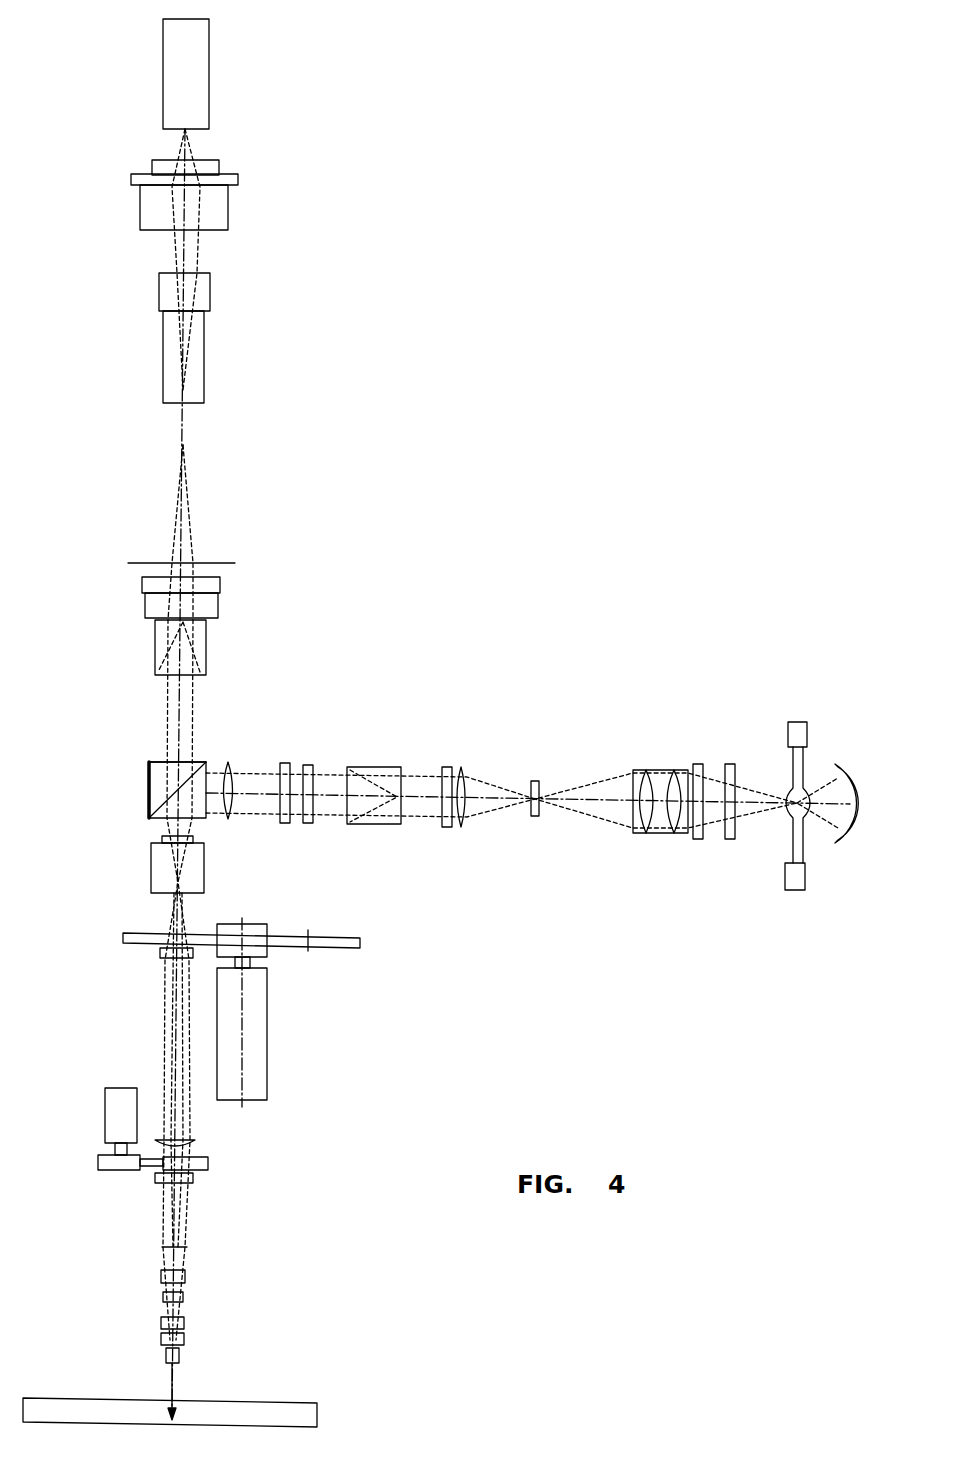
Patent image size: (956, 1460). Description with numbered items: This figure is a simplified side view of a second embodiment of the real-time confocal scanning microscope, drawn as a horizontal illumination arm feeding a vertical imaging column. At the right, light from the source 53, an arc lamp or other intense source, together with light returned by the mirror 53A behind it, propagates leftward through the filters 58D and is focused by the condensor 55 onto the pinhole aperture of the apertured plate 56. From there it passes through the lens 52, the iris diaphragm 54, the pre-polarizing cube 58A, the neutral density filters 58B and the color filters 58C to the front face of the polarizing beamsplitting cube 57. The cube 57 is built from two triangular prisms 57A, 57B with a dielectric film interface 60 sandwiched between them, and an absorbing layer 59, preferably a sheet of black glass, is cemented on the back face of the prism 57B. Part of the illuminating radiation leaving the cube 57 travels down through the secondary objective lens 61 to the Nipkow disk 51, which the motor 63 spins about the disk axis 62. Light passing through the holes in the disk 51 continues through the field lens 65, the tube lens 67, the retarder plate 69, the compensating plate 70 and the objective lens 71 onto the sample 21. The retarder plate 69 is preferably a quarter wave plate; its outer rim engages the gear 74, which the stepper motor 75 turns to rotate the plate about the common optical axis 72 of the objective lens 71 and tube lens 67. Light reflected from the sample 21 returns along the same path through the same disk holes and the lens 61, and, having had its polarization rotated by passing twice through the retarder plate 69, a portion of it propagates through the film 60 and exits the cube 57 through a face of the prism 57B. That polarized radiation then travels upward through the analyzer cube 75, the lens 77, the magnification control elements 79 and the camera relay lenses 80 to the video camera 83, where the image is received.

The sample 21 is at (82, 1403).
The Nipkow disk 51 is at (333, 947).
The lens 52 is at (463, 827).
The light source 53 is at (800, 760).
The mirror 53A is at (842, 840).
The iris diaphragm 54 is at (447, 827).
The condensor 55 is at (662, 770).
The apertured plate 56 is at (538, 817).
The polarizing beamsplitting cube 57 is at (175, 776).
The triangular prism 57A is at (199, 820).
The triangular prism 57B is at (150, 762).
The pre-polarizing cube 58A is at (372, 768).
The neutral density filters 58B is at (308, 765).
The color filters 58C is at (285, 763).
The filters 58D is at (743, 863).
The absorbing layer 59 is at (148, 787).
The dielectric film interface 60 is at (148, 800).
The secondary objective lens 61 is at (150, 865).
The disk axis 62 is at (243, 1032).
The motor 63 is at (263, 1070).
The field lens 65 is at (158, 953).
The tube lens 67 is at (193, 1143).
The retarder plate 69 is at (208, 1165).
The compensating plate 70 is at (192, 1182).
The objective lens 71 is at (210, 1247).
The common optical axis 72 is at (172, 1387).
The gear 74 is at (98, 1160).
The analyzer cube / stepper motor 75 is at (155, 648).
The lens 77 is at (143, 598).
The magnification control elements 79 is at (167, 348).
The camera relay lenses 80 is at (142, 202).
The video camera 83 is at (197, 102).